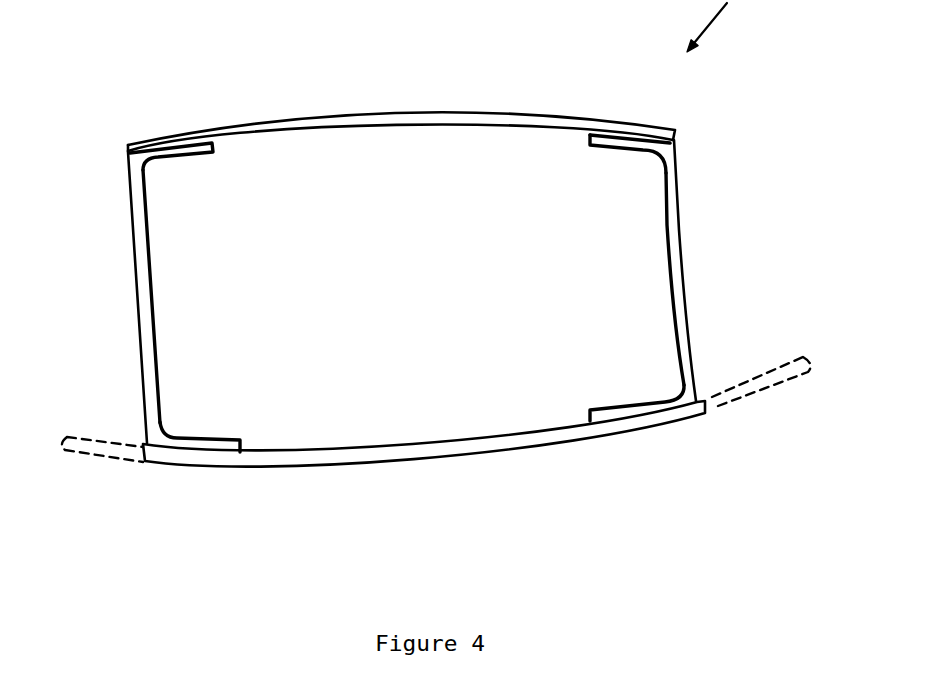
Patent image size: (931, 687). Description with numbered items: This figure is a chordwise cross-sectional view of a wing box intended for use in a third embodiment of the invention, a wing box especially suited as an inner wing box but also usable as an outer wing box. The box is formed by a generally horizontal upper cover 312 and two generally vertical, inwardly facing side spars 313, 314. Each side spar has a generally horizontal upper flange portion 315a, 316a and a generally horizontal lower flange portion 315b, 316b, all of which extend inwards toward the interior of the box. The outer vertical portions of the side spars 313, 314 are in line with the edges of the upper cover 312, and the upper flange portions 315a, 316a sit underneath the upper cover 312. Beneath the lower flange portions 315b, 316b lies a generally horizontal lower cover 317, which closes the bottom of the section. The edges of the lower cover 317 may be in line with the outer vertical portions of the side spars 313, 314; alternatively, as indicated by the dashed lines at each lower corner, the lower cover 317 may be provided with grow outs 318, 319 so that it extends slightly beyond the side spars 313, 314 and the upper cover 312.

The upper cover 312 is at (410, 120).
The side spar 313 is at (145, 300).
The side spar 314 is at (678, 255).
The upper flange portion 315a is at (180, 150).
The lower flange portion 315b is at (183, 445).
The upper flange portion 316a is at (613, 142).
The lower flange portion 316b is at (613, 413).
The lower cover 317 is at (433, 448).
The first extension portion 318 is at (98, 447).
The grow outs 319 is at (768, 378).